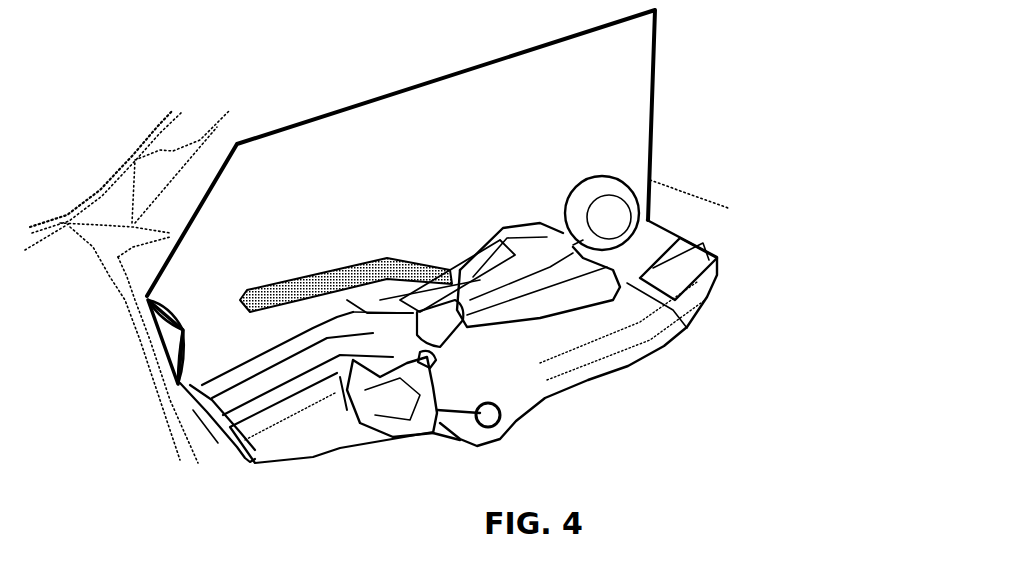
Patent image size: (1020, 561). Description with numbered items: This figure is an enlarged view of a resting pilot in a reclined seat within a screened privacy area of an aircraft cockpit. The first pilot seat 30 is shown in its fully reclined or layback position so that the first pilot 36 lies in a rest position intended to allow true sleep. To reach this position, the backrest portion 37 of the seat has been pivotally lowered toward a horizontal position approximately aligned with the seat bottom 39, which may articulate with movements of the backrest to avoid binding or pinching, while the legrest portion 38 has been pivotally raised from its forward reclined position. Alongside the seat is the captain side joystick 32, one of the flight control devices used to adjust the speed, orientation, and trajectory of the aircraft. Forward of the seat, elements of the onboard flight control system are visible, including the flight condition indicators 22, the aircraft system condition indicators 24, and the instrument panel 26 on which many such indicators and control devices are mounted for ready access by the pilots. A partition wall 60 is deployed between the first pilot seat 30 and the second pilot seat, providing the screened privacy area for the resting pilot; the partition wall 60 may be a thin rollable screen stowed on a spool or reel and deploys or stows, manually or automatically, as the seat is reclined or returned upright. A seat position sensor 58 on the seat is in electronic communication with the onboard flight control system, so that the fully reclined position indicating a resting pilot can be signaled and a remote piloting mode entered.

The partition wall 60 is at (640, 75).
The first pilot 36 is at (590, 190).
The backrest portion 37 is at (662, 328).
The captain side joystick 32 is at (432, 360).
The first pilot seat 30 is at (572, 443).
The seat position sensor 58 is at (491, 428).
The seat bottom 39 is at (428, 432).
The legrest portion 38 is at (340, 455).
The aircraft system condition indicators 24 is at (167, 305).
The instrument panel 26 is at (183, 330).
The flight condition indicators 22 is at (188, 350).